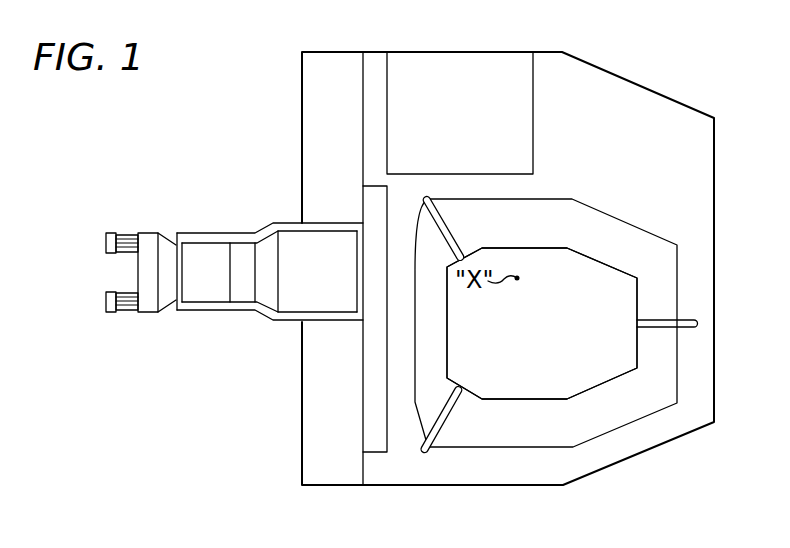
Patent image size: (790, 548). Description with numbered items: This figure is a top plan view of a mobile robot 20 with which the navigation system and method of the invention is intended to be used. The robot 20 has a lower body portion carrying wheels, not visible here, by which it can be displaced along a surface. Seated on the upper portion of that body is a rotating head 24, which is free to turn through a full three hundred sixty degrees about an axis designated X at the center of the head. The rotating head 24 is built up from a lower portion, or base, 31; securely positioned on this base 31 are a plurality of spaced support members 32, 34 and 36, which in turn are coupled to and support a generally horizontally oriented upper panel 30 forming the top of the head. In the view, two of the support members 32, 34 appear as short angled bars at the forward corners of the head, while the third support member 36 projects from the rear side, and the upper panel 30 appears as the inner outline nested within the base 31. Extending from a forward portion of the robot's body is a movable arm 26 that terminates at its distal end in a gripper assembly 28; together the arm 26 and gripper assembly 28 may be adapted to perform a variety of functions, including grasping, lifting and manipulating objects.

The mobile robot 20 is at (577, 55).
The rotating head 24 is at (618, 367).
The movable arm 26 is at (233, 313).
The gripper assembly 28 is at (127, 314).
The upper panel 30 is at (598, 260).
The lower portion 31 is at (547, 199).
The support member 32 is at (443, 220).
The support member 34 is at (448, 412).
The support member 36 is at (660, 328).